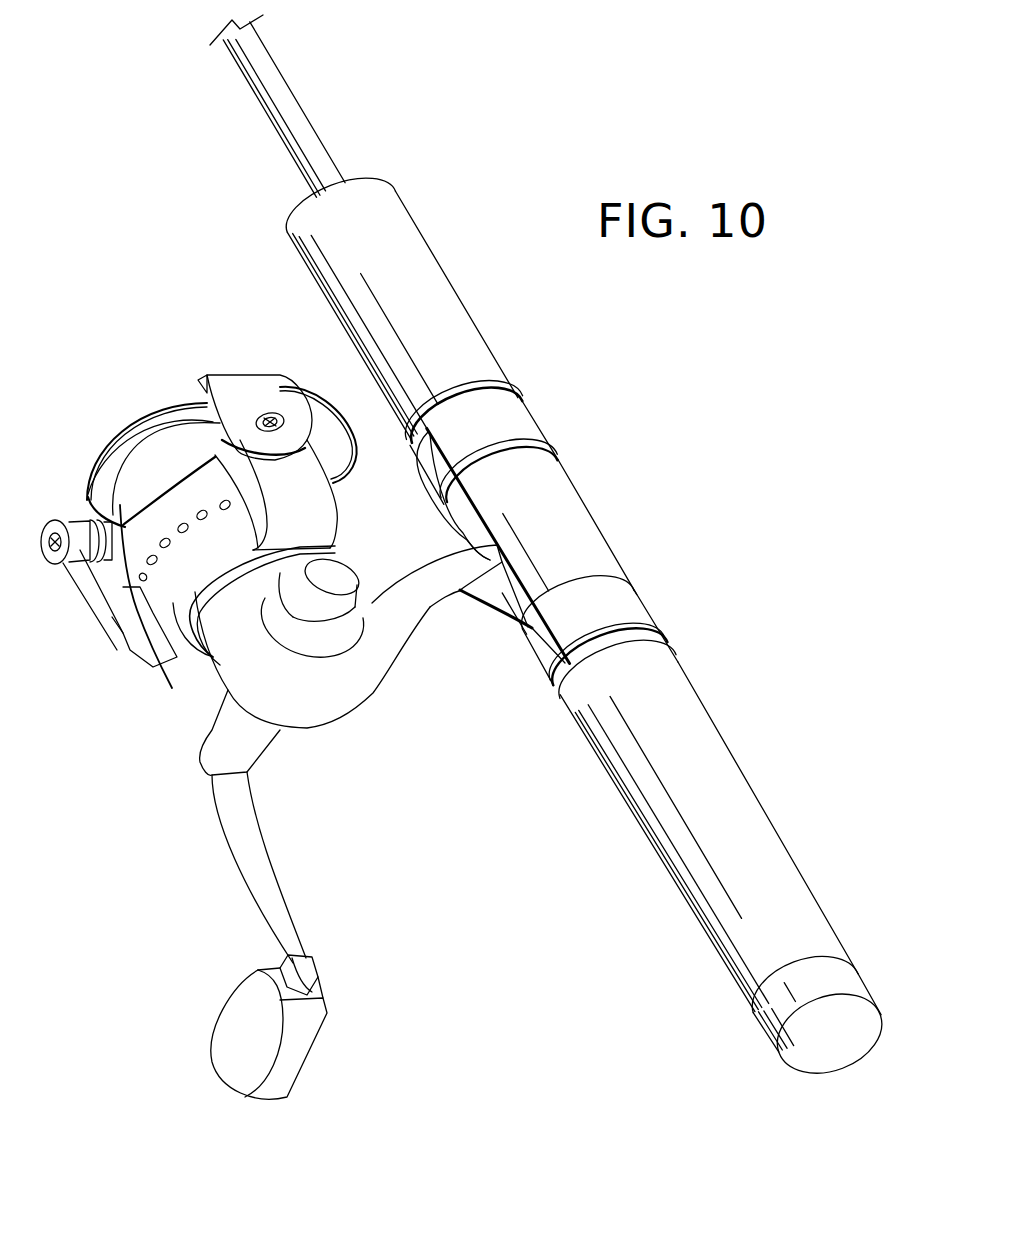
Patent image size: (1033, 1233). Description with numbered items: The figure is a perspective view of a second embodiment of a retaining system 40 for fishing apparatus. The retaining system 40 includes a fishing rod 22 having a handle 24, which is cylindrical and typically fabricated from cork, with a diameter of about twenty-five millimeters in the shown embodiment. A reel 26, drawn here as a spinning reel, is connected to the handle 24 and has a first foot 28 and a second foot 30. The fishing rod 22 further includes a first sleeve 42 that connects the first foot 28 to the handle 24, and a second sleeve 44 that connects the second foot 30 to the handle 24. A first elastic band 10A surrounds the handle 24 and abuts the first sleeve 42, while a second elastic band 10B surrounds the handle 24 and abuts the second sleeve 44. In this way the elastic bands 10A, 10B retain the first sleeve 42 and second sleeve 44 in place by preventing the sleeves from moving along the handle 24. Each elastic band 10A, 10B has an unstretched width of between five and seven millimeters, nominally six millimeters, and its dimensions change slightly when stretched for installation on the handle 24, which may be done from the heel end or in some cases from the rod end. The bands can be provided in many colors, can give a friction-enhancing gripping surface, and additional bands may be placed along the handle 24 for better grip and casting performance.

The fishing rod 22 is at (472, 170).
The handle 24 is at (723, 740).
The reel 26 is at (145, 678).
The first foot 28 is at (520, 610).
The second foot 30 is at (455, 527).
The retaining system 40 is at (504, 409).
The first sleeve 42 is at (638, 610).
The second sleeve 44 is at (518, 415).
The first elastic band 10A is at (660, 637).
The second elastic band 10B is at (513, 388).